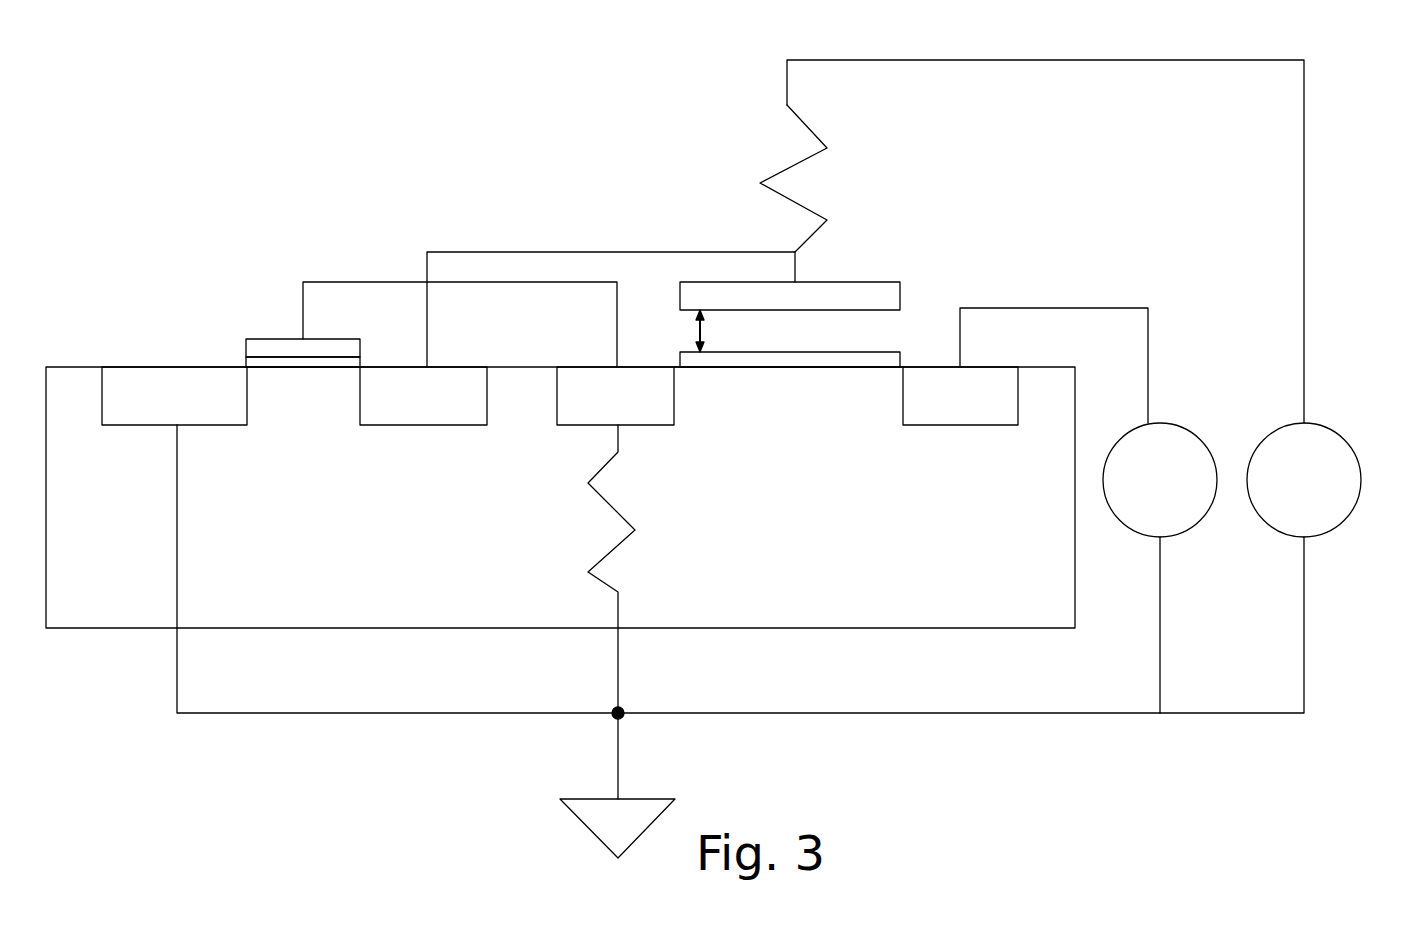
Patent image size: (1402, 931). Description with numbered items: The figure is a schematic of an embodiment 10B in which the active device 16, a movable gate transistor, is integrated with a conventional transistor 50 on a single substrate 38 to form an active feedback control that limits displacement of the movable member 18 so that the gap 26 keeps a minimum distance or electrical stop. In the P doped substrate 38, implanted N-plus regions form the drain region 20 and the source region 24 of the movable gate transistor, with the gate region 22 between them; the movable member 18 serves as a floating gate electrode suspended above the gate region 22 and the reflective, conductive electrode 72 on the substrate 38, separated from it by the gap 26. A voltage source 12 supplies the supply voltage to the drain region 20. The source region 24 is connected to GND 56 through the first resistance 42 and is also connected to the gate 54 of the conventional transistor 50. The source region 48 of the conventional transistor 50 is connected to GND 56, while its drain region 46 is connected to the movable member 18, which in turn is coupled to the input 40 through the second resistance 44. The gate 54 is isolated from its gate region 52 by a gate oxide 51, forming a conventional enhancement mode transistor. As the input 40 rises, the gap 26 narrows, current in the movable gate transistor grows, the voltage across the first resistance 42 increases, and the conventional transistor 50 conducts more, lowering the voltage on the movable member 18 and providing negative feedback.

The embodiment 10B is at (695, 203).
The voltage source 12 is at (1165, 418).
The active device 16 is at (928, 262).
The movable member 18 is at (815, 276).
The drain region 20 is at (976, 410).
The gate region 22 is at (811, 410).
The source region 24 is at (632, 410).
The gap 26 is at (694, 339).
The substrate 38 is at (1034, 600).
The input Vin 40 is at (1320, 420).
The resistance R1 42 is at (608, 496).
The resistance R2 44 is at (806, 124).
The drain region 46 is at (438, 410).
The source region 48 is at (190, 412).
The FET T2 50 is at (240, 314).
The gate oxide 51 is at (243, 365).
The gate region 52 is at (312, 410).
The gate 54 is at (338, 338).
The GND 56 is at (640, 798).
The electrode 72 is at (800, 351).